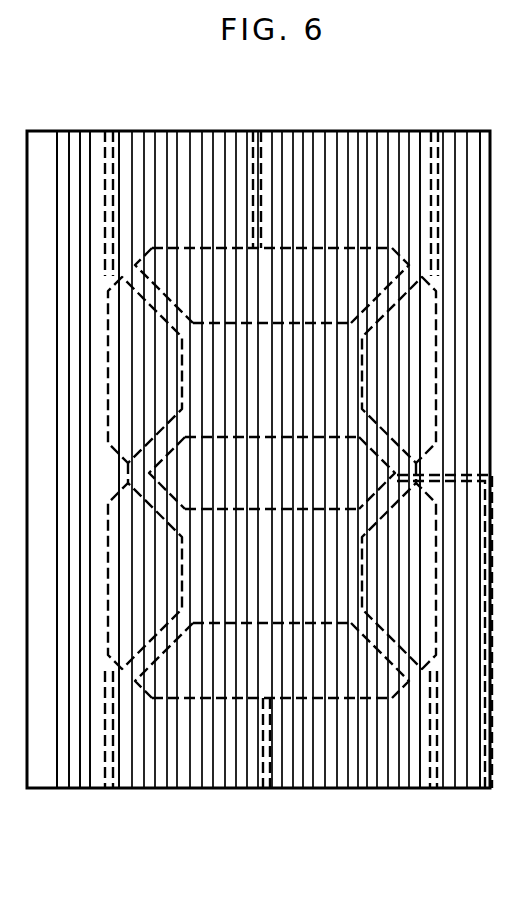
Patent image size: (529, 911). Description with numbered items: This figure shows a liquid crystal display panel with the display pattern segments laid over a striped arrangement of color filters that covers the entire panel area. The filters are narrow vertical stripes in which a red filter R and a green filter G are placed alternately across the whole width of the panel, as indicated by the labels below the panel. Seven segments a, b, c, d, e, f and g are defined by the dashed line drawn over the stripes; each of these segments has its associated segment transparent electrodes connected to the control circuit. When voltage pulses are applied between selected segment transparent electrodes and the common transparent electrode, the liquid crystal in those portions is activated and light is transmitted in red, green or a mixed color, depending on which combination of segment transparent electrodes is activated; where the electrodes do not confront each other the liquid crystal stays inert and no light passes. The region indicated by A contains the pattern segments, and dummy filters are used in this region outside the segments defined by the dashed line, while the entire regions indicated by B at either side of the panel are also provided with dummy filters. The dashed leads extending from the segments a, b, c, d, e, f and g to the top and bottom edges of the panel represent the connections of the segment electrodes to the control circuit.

The segment a is at (257, 178).
The segment b is at (436, 192).
The segment c is at (429, 741).
The segment d is at (265, 755).
The segment e is at (110, 741).
The segment f is at (109, 192).
The segment g is at (444, 643).
The red filter R is at (60, 788).
The green filter G is at (178, 828).
The area A is at (437, 851).
The area B is at (22, 851).